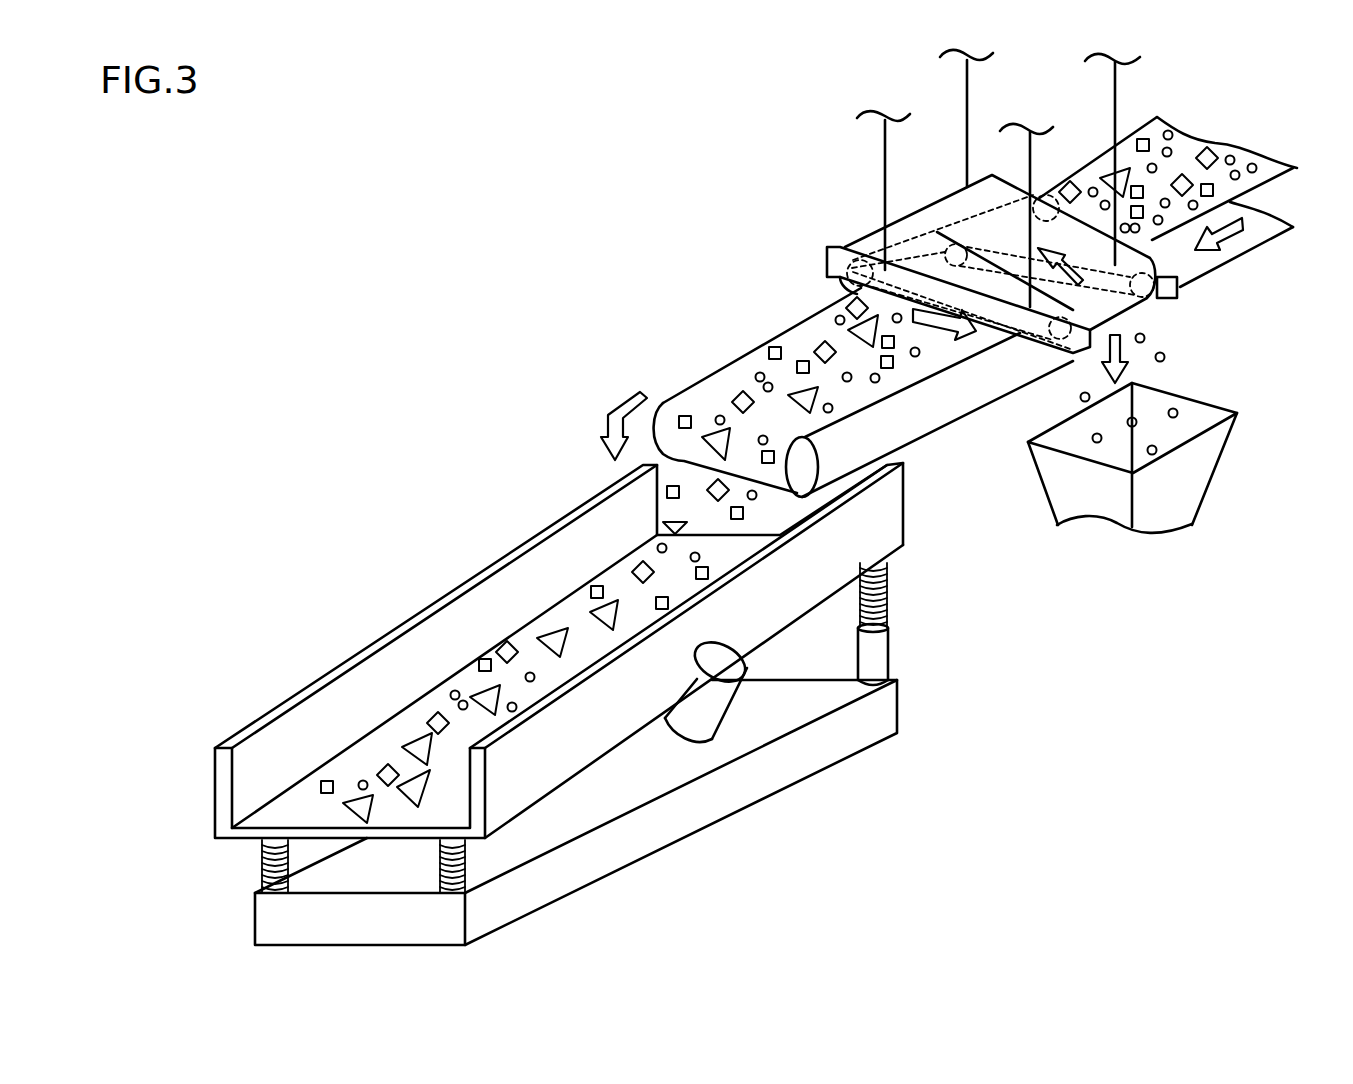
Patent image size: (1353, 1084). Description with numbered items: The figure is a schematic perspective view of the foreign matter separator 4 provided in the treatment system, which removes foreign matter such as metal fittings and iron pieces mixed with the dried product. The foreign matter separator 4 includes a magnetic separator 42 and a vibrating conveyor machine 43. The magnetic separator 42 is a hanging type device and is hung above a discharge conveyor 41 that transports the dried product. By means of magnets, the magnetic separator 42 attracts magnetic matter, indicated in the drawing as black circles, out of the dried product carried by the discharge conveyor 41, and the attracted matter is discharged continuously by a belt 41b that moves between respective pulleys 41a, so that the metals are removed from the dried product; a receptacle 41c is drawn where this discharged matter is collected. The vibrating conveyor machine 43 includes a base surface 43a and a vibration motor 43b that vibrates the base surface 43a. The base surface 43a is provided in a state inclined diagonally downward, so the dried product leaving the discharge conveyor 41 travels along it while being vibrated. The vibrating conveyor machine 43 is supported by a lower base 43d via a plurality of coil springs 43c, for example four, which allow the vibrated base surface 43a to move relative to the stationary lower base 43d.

The foreign matter separator 4 is at (471, 242).
The discharge conveyor 41 is at (788, 337).
The pulleys 41a is at (873, 273).
The belt 41b is at (1117, 247).
The collection container 41c is at (1213, 473).
The magnetic separator 42 is at (907, 178).
The vibrating conveyor machine 43 is at (427, 587).
The base surface 43a is at (292, 813).
The vibration motor 43b is at (707, 720).
The coil springs 43c is at (440, 865).
The lower base 43d is at (713, 810).